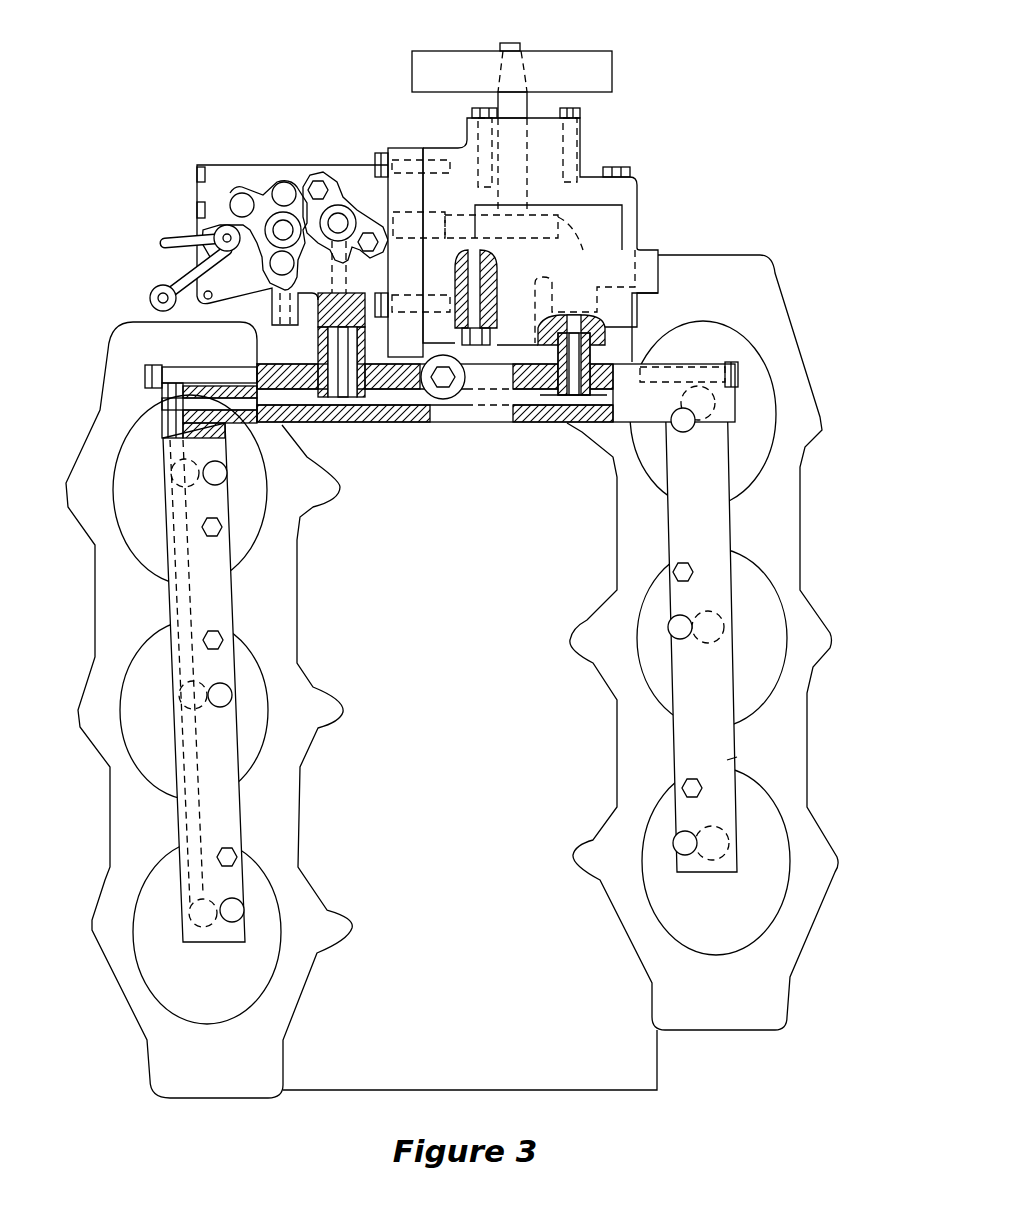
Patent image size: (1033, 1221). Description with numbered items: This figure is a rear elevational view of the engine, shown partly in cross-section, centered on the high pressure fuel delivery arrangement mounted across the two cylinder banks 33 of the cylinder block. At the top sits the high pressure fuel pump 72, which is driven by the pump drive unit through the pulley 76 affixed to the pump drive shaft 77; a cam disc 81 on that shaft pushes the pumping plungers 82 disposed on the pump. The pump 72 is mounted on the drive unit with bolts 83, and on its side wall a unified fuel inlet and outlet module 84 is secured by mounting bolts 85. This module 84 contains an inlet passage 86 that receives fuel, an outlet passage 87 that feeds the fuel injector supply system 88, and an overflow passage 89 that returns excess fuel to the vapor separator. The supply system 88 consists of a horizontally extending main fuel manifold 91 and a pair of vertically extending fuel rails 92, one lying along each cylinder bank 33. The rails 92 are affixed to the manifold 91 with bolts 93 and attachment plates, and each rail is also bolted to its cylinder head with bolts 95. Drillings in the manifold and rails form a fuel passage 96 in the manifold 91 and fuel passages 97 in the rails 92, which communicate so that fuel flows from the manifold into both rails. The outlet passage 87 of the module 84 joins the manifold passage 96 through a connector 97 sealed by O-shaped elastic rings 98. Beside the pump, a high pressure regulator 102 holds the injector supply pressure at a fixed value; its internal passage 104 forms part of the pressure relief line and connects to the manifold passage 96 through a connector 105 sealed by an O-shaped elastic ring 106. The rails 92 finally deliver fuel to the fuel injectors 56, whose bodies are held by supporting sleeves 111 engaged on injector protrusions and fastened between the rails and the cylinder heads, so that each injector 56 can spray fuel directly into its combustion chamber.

The cylinder banks 33 is at (121, 330).
The fuel injector 56 is at (175, 465).
The high pressure fuel pump 72 is at (243, 165).
The pulley 76 is at (607, 66).
The pump drive shaft 77 is at (528, 102).
The cam disc 81 is at (529, 297).
The pumping plungers 82 is at (432, 150).
The bolts 83 is at (623, 168).
The fuel inlet and outlet module 84 is at (258, 200).
The mounting bolts 85 is at (376, 160).
The inlet passage 86 is at (215, 252).
The outlet passage 87 is at (332, 318).
The fuel injector supply system 88 is at (735, 757).
The overflow passage 89 is at (268, 307).
The main fuel manifold 91 is at (465, 414).
The fuel rails 92 is at (244, 823).
The bolts 93 is at (145, 378).
The bolts 95 is at (215, 530).
The fuel passage 96 is at (300, 427).
The fuel passages / connector 97 is at (318, 402).
The O-shaped elastic rings 98 is at (357, 388).
The high pressure regulator 102 is at (600, 240).
The passage 104 is at (590, 352).
The connector 105 is at (591, 396).
The O-shaped elastic ring 106 is at (553, 398).
The supporting sleeve 111 is at (682, 845).